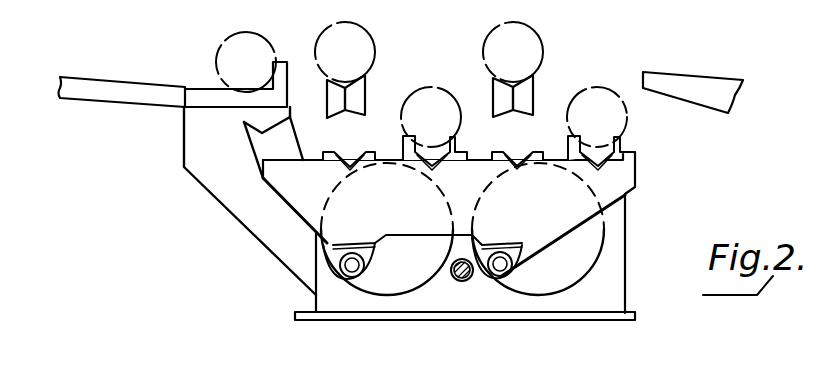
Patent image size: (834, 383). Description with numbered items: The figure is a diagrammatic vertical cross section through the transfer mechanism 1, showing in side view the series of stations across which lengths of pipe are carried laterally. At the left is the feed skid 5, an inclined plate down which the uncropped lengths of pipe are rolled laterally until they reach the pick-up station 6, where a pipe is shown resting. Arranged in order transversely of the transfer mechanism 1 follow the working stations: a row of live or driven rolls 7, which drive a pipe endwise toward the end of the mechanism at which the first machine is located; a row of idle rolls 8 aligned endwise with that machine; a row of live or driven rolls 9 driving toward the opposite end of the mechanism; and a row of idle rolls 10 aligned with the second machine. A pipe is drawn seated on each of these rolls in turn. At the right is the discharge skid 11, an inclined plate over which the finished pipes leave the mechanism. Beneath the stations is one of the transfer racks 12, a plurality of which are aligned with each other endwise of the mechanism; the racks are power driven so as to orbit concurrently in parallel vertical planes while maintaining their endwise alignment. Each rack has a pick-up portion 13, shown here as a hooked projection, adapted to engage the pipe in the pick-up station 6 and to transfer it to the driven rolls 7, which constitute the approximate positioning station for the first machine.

The transfer mechanism 1 is at (627, 225).
The feed skid 5 is at (135, 62).
The pick-up station 6 is at (242, 88).
The live or driven rolls 7 is at (353, 80).
The idle rolls 8 is at (415, 145).
The live or driven rolls 9 is at (503, 88).
The idle rolls 10 is at (578, 137).
The discharge skid 11 is at (723, 55).
The transfer racks 12 is at (288, 205).
The pick-up portion 13 is at (258, 145).